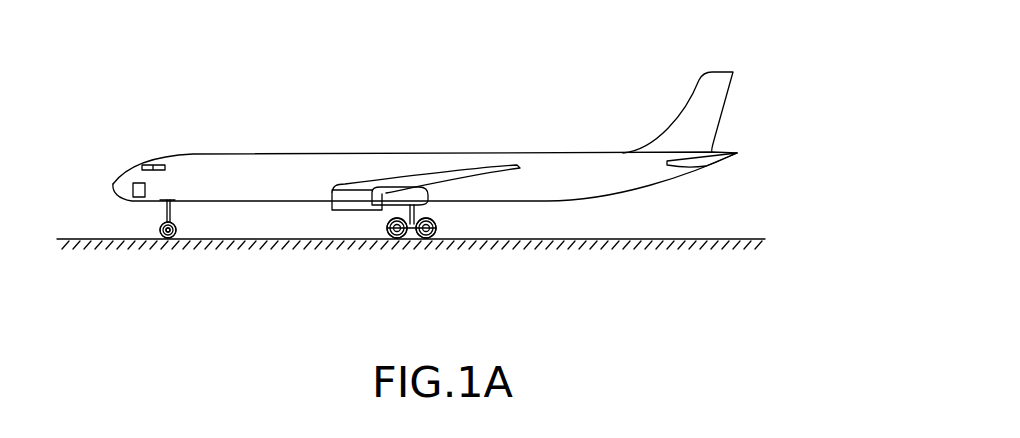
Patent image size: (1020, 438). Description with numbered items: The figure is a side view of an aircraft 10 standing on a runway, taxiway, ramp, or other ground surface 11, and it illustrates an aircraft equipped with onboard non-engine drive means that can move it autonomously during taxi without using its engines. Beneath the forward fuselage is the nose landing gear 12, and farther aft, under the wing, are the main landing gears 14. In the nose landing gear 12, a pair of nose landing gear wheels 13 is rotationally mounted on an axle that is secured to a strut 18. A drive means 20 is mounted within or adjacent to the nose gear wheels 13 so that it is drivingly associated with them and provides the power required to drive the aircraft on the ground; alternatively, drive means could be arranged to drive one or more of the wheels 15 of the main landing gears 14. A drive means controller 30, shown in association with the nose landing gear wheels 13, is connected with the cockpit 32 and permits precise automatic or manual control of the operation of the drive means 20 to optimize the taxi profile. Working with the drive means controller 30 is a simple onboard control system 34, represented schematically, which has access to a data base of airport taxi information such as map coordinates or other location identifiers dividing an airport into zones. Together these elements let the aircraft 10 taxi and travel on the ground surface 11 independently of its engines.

The aircraft 10 is at (500, 113).
The ground surface 11 is at (678, 239).
The nose landing gear 12 is at (157, 241).
The nose landing gear wheels 13 is at (176, 228).
The main landing gears 14 is at (410, 244).
The main landing gear wheels 15 is at (395, 240).
The strut 18 is at (163, 208).
The drive means 20 is at (172, 237).
The drive means controller 30 is at (156, 227).
The cockpit 32 is at (139, 167).
The onboard control system 34 is at (124, 188).